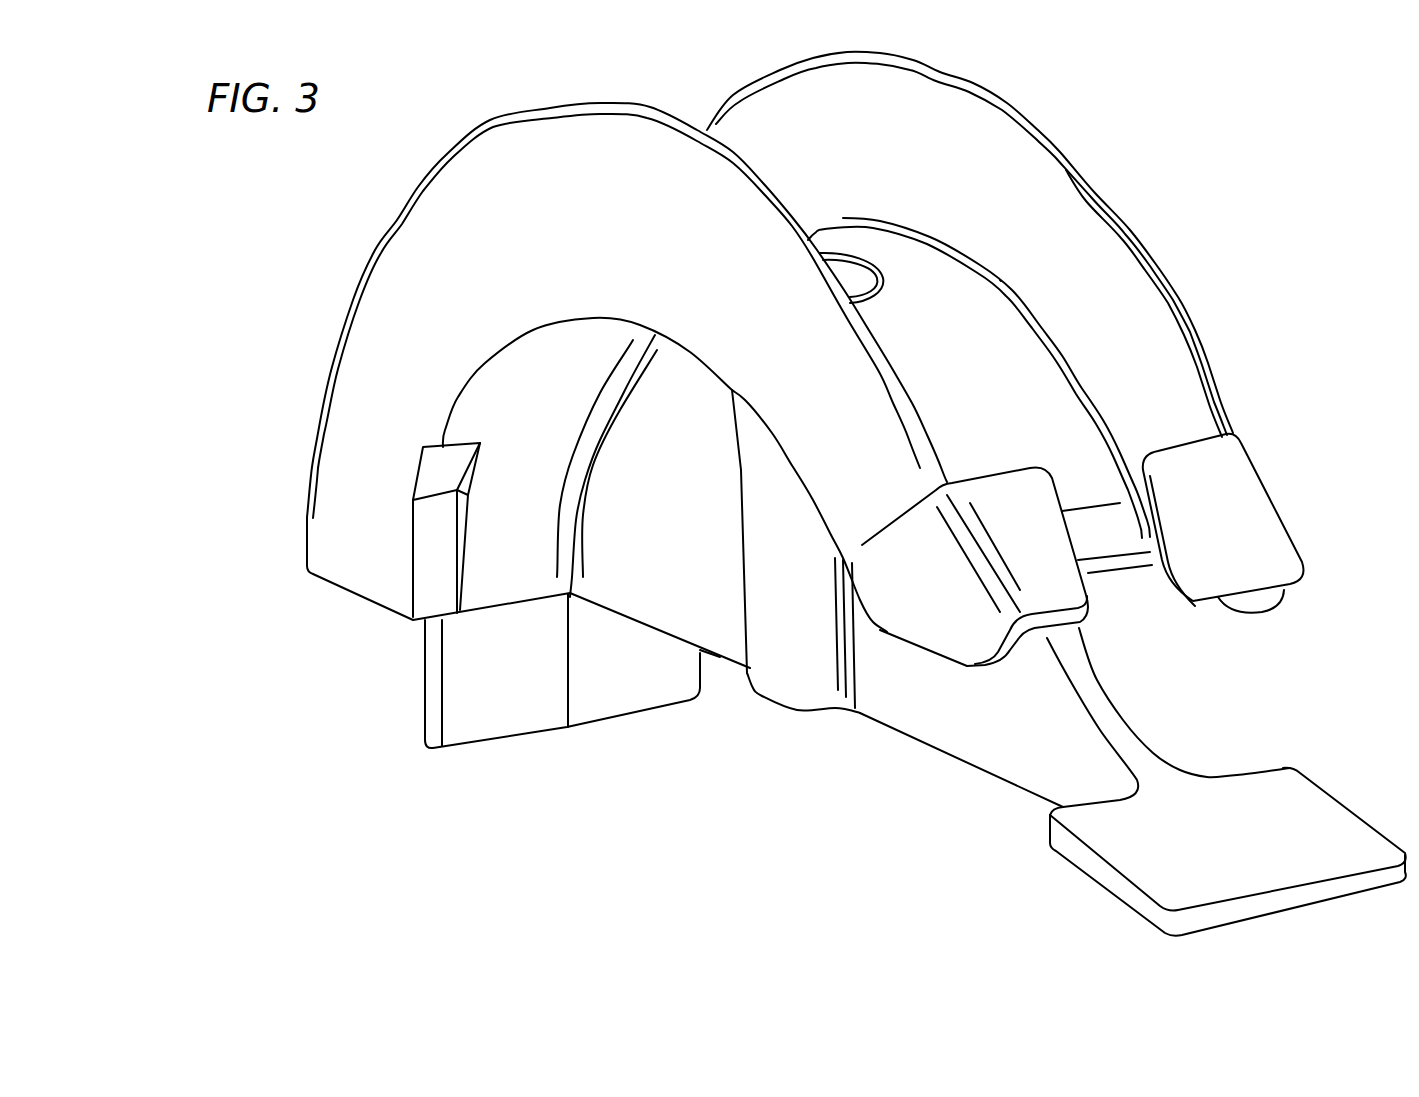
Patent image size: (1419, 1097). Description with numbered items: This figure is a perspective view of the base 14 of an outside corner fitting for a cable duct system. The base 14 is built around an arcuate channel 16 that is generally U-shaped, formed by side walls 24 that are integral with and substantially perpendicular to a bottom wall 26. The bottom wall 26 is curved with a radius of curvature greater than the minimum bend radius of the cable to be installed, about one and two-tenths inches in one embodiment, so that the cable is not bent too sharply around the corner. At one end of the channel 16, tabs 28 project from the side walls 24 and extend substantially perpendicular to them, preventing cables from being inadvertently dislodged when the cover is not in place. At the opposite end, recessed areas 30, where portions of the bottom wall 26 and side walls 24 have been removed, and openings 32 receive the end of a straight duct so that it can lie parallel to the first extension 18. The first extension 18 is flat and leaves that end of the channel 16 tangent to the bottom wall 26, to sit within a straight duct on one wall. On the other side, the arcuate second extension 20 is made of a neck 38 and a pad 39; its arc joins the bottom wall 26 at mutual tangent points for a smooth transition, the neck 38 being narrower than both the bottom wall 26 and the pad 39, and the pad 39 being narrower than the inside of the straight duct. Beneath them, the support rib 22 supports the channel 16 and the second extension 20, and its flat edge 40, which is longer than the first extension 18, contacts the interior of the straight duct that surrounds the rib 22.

The base 14 is at (368, 189).
The arcuate channel 16 is at (997, 84).
The first extension 18 is at (514, 748).
The second extension 20 is at (1143, 726).
The support rib 22 is at (921, 760).
The side walls 24 is at (800, 376).
The bottom wall 26 is at (960, 366).
The tabs 28 is at (1013, 503).
The recessed areas 30 is at (430, 553).
The openings 32 is at (433, 472).
The neck 38 is at (1080, 682).
The pad 39 is at (1147, 877).
The flat edge 40 is at (720, 657).